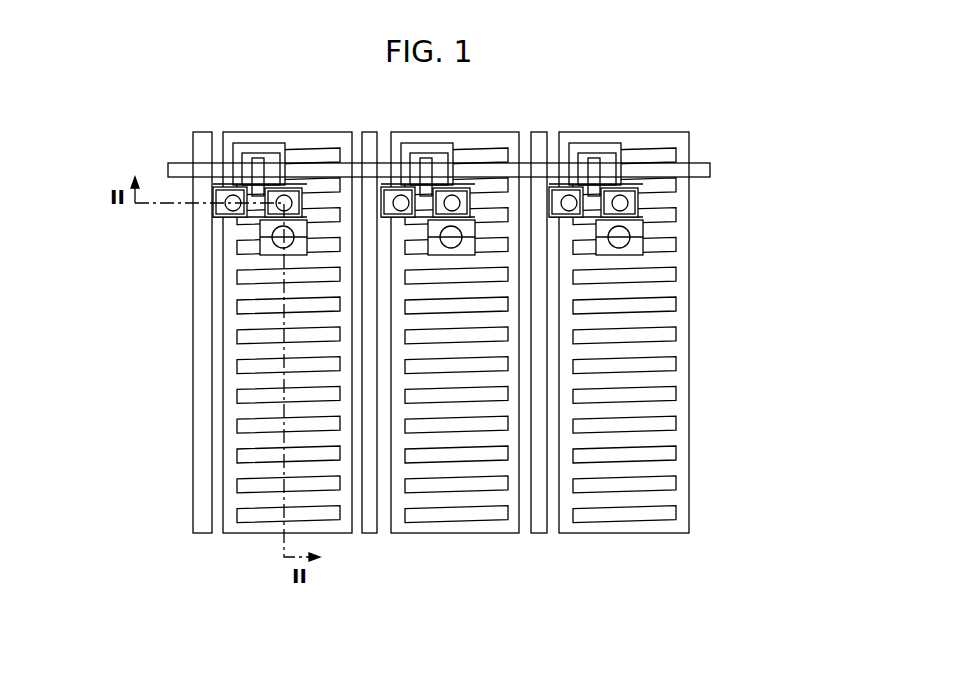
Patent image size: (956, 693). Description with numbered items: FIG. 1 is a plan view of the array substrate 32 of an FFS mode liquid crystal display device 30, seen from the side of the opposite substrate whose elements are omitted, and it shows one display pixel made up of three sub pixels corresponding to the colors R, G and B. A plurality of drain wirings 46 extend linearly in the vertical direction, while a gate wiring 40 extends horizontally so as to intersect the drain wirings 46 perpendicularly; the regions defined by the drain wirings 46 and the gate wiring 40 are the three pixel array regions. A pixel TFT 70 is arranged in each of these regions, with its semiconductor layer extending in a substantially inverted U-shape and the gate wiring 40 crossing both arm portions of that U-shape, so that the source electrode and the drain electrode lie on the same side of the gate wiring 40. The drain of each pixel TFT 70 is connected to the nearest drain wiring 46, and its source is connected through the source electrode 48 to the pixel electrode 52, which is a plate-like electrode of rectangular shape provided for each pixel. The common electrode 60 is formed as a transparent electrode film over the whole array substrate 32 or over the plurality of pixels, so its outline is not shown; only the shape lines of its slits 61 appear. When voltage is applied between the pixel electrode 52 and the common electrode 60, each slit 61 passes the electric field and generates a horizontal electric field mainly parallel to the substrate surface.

The FFS mode liquid crystal display device 30 is at (442, 339).
The array substrate 32 is at (442, 339).
The gate wiring 40 is at (185, 167).
The drain wiring 46 is at (204, 530).
The source electrode 48 is at (260, 237).
The pixel electrode 52 is at (328, 536).
The common electrode 60 is at (431, 339).
The slit 61 is at (257, 518).
The pixel TFT 70 is at (297, 133).